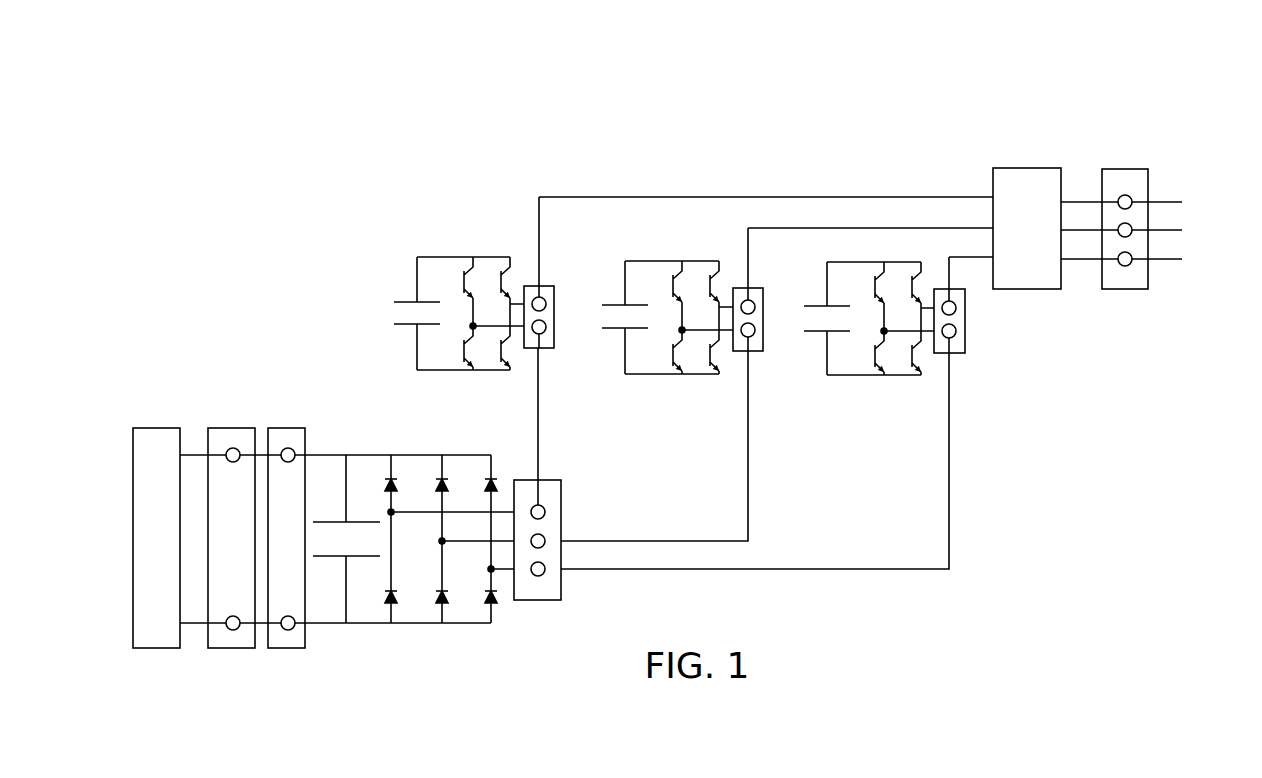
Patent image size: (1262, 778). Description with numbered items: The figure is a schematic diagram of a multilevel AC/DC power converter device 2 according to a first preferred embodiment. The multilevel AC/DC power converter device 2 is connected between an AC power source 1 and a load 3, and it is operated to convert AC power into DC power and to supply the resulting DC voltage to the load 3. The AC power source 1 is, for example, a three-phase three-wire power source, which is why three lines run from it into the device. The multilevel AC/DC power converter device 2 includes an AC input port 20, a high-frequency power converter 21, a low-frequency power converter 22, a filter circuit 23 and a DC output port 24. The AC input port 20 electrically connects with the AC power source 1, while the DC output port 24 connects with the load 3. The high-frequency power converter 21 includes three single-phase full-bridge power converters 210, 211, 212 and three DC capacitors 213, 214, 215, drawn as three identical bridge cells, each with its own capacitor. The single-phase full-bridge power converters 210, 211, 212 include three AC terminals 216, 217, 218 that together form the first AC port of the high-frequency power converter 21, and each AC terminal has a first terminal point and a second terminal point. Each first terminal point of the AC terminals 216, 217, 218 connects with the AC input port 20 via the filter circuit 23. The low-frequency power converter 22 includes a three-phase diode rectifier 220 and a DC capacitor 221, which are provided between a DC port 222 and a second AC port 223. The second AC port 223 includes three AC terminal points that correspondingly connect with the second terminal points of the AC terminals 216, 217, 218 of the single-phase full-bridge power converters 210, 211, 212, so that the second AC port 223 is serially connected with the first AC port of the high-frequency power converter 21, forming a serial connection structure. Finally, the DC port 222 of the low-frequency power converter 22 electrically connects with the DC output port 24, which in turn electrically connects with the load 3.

The AC power source 1 is at (1195, 175).
The multilevel AC/DC power converter device 2 is at (806, 156).
The load 3 is at (162, 428).
The AC input port 20 is at (1125, 169).
The high-frequency power converter 21 is at (597, 162).
The low-frequency power converter 22 is at (419, 503).
The filter circuit 23 is at (1038, 168).
The DC output port 24 is at (233, 428).
The single-phase full-bridge power converter 210 is at (505, 259).
The single-phase full-bridge power converter 211 is at (715, 262).
The single-phase full-bridge power converter 212 is at (931, 263).
The DC capacitor 213 is at (423, 300).
The DC capacitor 214 is at (630, 305).
The DC capacitor 215 is at (830, 307).
The AC terminal 216 is at (545, 285).
The AC terminal 217 is at (762, 302).
The AC terminal 218 is at (963, 338).
The three-phase diode rectifier 220 is at (445, 477).
The DC capacitor 221 is at (352, 520).
The DC port 222 is at (292, 428).
The second AC port 223 is at (548, 480).